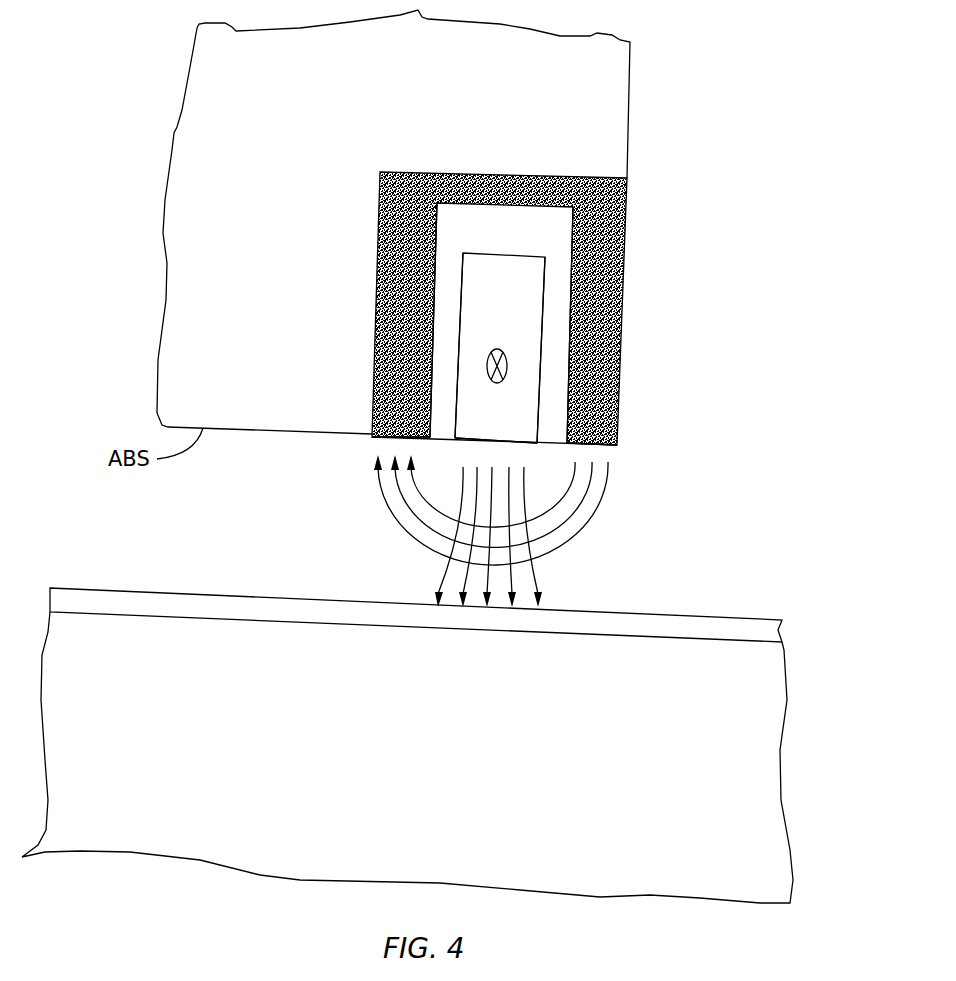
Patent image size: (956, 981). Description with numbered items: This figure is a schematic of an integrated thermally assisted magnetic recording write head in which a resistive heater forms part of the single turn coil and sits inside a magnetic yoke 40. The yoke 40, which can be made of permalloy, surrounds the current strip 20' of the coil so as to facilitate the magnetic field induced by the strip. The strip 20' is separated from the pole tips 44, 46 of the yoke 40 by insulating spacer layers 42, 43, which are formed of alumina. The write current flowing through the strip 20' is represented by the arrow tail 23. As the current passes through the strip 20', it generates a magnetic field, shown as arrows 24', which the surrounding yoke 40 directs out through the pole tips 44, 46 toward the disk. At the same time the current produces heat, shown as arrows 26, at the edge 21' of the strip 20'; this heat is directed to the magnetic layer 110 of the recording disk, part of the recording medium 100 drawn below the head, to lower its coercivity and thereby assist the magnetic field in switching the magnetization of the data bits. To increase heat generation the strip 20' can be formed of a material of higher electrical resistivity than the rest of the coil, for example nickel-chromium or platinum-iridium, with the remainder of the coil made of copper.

The magnetic yoke 40 is at (377, 277).
The current strip 20' is at (602, 348).
The arrow tail 23 is at (507, 364).
The insulating spacer layer 43 is at (442, 391).
The insulating spacer layer 42 is at (550, 386).
The yoke pole tip 44 is at (377, 437).
The yoke pole tip 46 is at (611, 446).
The edge of current strip 21' is at (605, 474).
The magnetic field arrows 24' is at (456, 510).
The heat arrows 26 is at (540, 602).
The magnetic layer 110 is at (713, 623).
The recording medium 100 is at (703, 767).